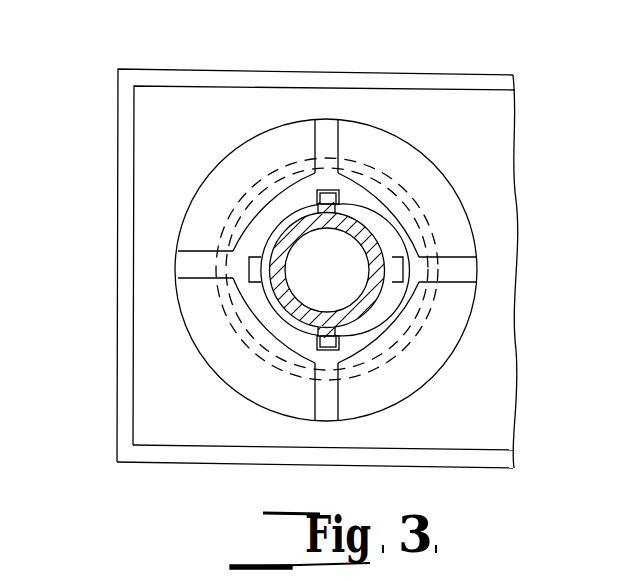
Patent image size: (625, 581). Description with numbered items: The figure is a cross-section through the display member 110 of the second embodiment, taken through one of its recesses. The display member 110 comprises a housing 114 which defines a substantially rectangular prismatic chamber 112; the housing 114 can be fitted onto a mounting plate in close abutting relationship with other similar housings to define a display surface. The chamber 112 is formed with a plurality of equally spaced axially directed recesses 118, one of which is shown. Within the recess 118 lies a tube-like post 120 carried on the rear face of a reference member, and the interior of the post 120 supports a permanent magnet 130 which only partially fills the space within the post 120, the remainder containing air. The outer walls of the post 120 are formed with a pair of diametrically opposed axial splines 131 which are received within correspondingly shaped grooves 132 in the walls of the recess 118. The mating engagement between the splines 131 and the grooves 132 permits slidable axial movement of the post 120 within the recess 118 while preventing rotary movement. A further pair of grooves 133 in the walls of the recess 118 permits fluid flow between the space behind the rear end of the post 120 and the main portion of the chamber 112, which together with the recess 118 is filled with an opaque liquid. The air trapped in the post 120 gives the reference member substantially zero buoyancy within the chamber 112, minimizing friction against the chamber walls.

The display member 110 is at (90, 193).
The chamber 112 is at (183, 98).
The housing 114 is at (227, 71).
The recess 118 is at (378, 236).
The post 120 is at (366, 306).
The permanent magnet 130 is at (307, 280).
The axial splines 131 is at (341, 197).
The grooves 132 is at (330, 190).
The grooves 133 is at (402, 284).